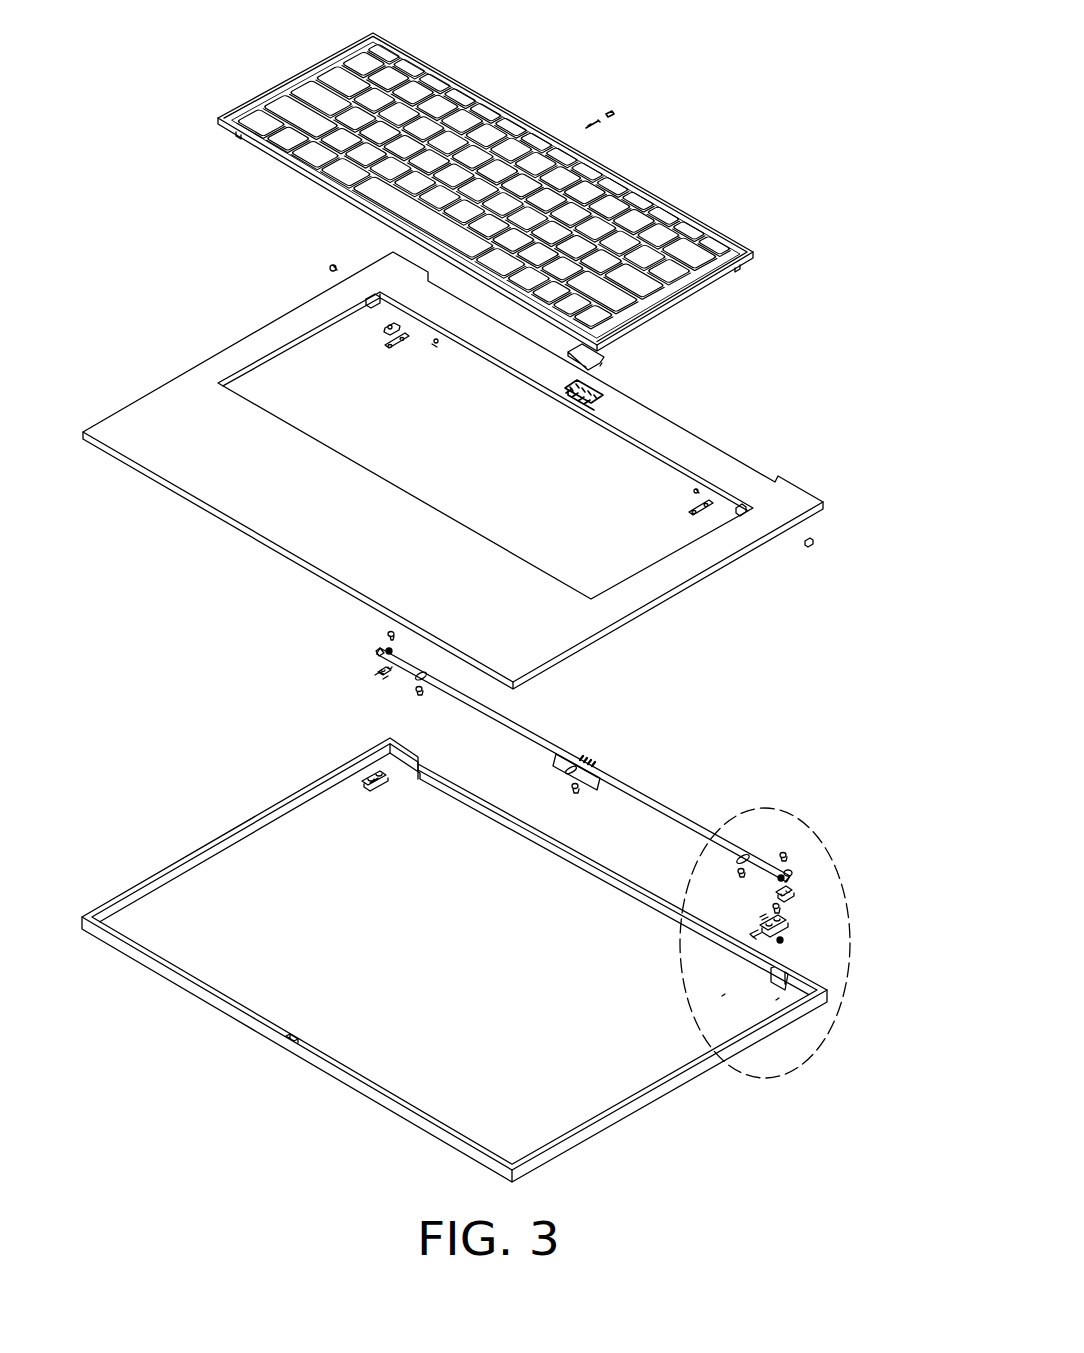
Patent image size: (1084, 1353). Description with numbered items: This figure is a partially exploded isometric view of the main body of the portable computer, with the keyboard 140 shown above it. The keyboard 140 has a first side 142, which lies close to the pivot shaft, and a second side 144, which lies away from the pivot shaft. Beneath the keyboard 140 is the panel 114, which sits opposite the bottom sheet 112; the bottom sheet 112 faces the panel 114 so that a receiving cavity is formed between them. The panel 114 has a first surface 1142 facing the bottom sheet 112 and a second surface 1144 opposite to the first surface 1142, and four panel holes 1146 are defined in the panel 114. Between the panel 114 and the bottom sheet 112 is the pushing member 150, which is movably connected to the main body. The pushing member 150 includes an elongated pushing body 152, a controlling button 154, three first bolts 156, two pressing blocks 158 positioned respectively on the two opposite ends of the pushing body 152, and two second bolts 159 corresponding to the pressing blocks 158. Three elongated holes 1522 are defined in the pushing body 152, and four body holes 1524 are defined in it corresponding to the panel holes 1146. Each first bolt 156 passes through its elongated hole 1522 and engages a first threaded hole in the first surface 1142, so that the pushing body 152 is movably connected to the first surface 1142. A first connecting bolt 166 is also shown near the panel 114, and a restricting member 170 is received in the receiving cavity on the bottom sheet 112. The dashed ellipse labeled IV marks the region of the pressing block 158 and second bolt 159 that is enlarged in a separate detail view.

The bottom sheet 112 is at (247, 887).
The panel 114 is at (875, 435).
The first surface 1142 is at (776, 541).
The second surface 1144 is at (756, 490).
The panel holes 1146 is at (598, 392).
The keyboard 140 is at (298, 78).
The first side 142 is at (632, 181).
The second side 144 is at (303, 165).
The pushing member 150 is at (370, 690).
The pushing body 152 is at (638, 792).
The elongated holes 1522 is at (575, 767).
The body holes 1524 is at (586, 758).
The controlling button 154 is at (598, 357).
The first bolts 156 is at (577, 790).
The pressing blocks 158 is at (788, 897).
The second bolts 159 is at (784, 853).
The first connecting bolts 166 is at (360, 300).
The restricting members 170 is at (375, 777).
The detail region IV is at (773, 808).